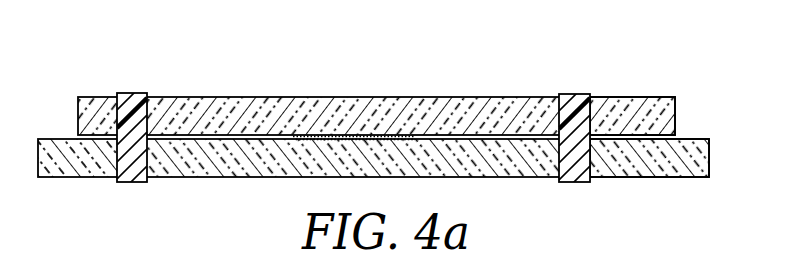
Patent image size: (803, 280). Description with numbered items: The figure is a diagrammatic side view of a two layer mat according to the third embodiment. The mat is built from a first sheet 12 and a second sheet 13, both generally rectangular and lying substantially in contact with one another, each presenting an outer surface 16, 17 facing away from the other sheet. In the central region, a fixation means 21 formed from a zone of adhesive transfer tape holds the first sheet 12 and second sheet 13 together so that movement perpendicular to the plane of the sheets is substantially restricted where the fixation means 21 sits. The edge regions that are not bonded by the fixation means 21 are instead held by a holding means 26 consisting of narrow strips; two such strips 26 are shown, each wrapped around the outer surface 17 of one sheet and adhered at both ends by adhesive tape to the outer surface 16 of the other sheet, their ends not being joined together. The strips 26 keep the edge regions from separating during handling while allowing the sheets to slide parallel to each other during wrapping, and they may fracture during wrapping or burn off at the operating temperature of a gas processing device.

The first sheet 12 is at (273, 110).
The second sheet 13 is at (237, 163).
The outer surface 16 is at (657, 98).
The outer surface 17 is at (663, 178).
The fixation means 21 is at (397, 140).
The holding means 26 is at (135, 93).